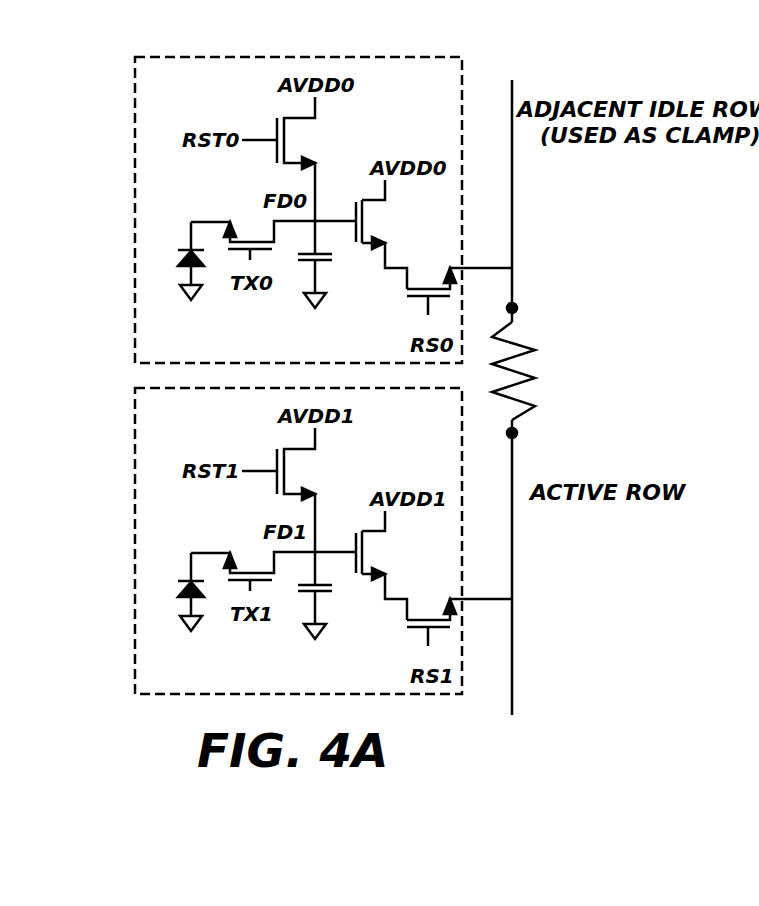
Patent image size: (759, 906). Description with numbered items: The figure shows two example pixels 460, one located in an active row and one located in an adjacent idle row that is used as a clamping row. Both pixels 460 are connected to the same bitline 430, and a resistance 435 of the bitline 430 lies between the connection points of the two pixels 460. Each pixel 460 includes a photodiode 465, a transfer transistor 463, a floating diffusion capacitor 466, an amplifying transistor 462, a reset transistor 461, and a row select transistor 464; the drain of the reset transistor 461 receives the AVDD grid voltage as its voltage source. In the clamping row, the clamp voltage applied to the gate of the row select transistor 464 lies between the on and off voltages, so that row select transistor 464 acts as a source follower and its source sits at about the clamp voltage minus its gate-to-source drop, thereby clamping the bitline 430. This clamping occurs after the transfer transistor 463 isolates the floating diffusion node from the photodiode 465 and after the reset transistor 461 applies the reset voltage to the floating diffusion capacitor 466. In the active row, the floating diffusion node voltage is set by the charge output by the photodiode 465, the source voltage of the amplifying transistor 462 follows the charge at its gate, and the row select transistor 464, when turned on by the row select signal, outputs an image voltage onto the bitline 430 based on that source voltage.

The bitline 430 is at (536, 662).
The resistance 435 is at (527, 370).
The pixel 460 is at (133, 216).
The reset transistor 461 is at (283, 117).
The amplifying transistor 462 is at (358, 205).
The transfer transistor 463 is at (247, 225).
The row select transistor 464 is at (420, 303).
The photodiode 465 is at (177, 274).
The floating diffusion capacitor 466 is at (318, 265).